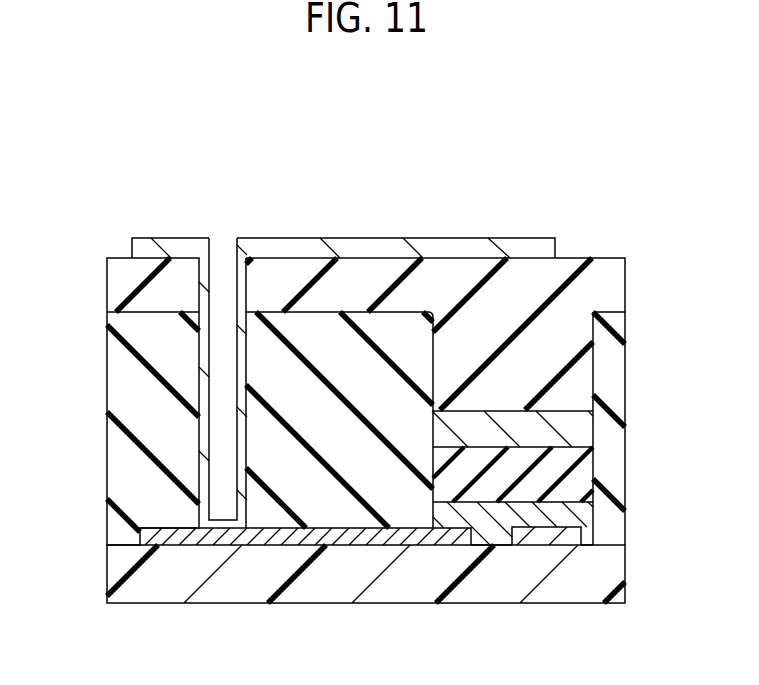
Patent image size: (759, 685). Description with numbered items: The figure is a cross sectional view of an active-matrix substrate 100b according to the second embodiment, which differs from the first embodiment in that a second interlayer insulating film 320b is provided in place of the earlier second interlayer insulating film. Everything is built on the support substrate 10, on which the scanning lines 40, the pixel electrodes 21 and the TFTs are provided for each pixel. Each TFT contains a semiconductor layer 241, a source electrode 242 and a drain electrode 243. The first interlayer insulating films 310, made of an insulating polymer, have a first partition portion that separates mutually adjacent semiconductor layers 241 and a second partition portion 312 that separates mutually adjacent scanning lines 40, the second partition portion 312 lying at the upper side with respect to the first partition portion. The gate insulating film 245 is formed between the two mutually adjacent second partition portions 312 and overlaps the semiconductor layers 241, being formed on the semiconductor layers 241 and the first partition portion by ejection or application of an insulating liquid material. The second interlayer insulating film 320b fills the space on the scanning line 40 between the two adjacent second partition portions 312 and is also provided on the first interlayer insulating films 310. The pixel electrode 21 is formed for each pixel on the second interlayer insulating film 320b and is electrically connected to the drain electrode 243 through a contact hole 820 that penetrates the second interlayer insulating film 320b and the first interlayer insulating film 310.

The active-matrix substrate 100b is at (104, 112).
The support substrate 10 is at (610, 575).
The pixel electrode 21 is at (451, 248).
The scanning line 40 is at (585, 432).
The semiconductor layer 241 is at (585, 517).
The source electrode 242 is at (543, 540).
The drain electrode 243 is at (270, 540).
The gate insulating film 245 is at (585, 471).
The first interlayer insulating film 310 is at (370, 360).
The second partition portion 312 is at (610, 377).
The second interlayer insulating film 320b is at (598, 280).
The contact hole 820 is at (238, 356).